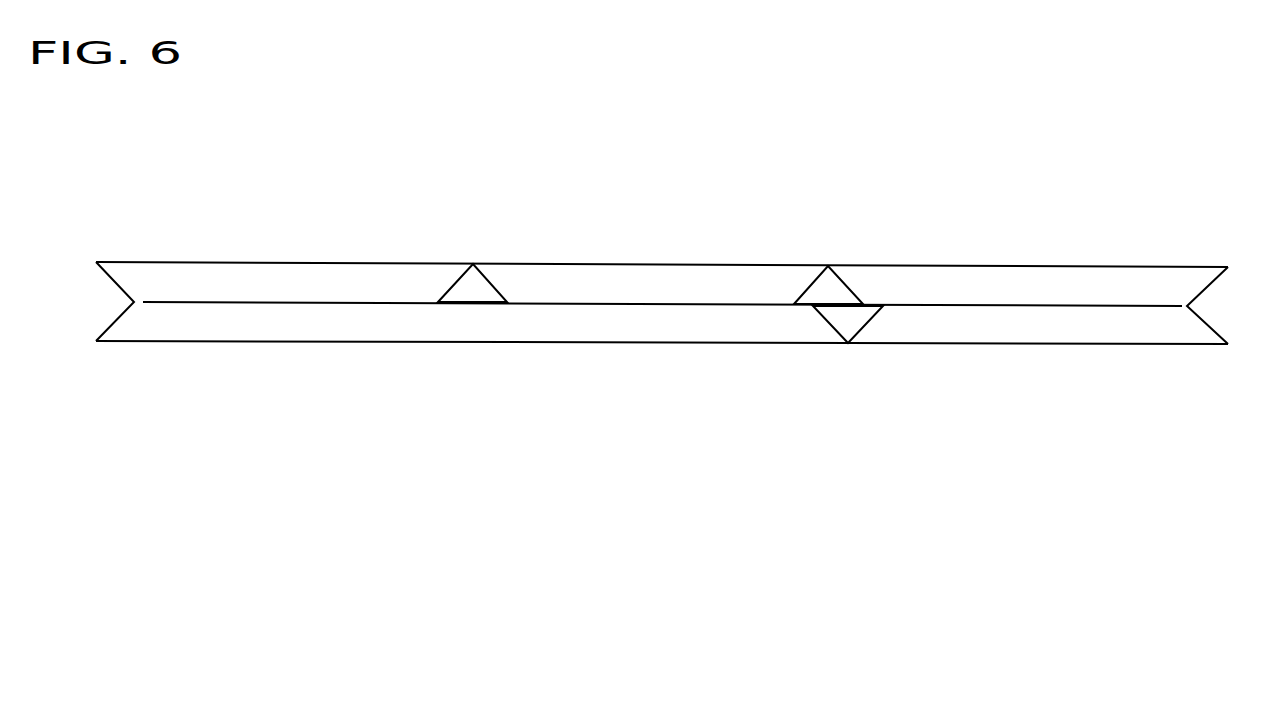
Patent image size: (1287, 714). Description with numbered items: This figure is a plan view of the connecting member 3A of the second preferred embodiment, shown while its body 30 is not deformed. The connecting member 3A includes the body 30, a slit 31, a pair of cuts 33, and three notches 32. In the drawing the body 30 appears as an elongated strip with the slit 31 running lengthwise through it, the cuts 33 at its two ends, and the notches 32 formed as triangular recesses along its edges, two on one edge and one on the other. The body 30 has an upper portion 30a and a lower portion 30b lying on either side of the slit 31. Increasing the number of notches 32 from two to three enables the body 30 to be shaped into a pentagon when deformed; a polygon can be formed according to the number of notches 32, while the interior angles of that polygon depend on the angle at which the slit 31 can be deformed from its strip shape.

The connecting member 3A is at (291, 148).
The body 30 is at (650, 265).
The upper layer 30a is at (732, 293).
The lower layer 30b is at (642, 320).
The slit 31 is at (1038, 305).
The notch 32 is at (457, 285).
The cut 33 is at (117, 322).